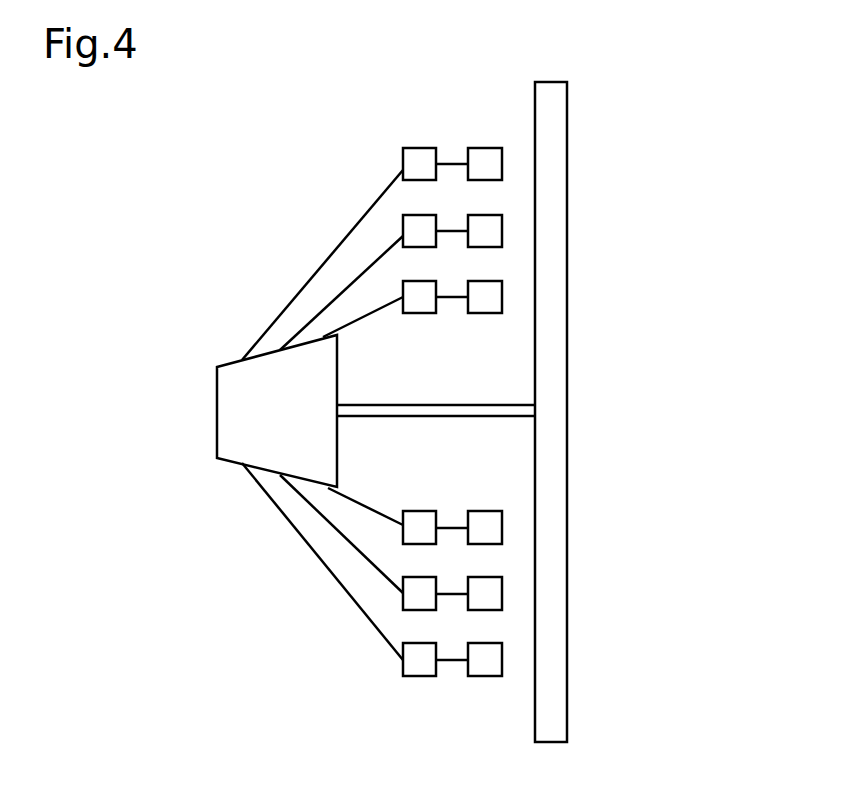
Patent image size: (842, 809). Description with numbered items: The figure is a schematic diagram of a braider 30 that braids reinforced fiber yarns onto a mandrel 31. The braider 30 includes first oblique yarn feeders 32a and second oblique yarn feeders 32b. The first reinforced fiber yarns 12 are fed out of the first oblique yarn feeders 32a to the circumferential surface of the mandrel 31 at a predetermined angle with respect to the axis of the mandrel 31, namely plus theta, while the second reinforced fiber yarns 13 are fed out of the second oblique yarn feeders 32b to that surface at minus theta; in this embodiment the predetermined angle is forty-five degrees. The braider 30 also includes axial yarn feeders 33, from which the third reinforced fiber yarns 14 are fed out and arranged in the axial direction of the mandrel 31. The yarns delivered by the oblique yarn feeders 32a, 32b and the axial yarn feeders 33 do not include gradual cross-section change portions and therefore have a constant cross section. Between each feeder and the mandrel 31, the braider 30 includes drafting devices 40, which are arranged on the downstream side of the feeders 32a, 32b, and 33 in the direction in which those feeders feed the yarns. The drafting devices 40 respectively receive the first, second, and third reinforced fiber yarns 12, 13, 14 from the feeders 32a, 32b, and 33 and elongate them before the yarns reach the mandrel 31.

The braider 30 is at (285, 183).
The mandrel 31 is at (217, 388).
The first reinforced fiber yarns 12 is at (370, 262).
The second reinforced fiber yarns 13 is at (353, 228).
The third reinforced fiber yarns 14 is at (367, 316).
The drafting devices 40 is at (416, 148).
The first oblique yarn feeders 32a is at (480, 247).
The second oblique yarn feeders 32b is at (482, 148).
The axial yarn feeders 33 is at (485, 313).